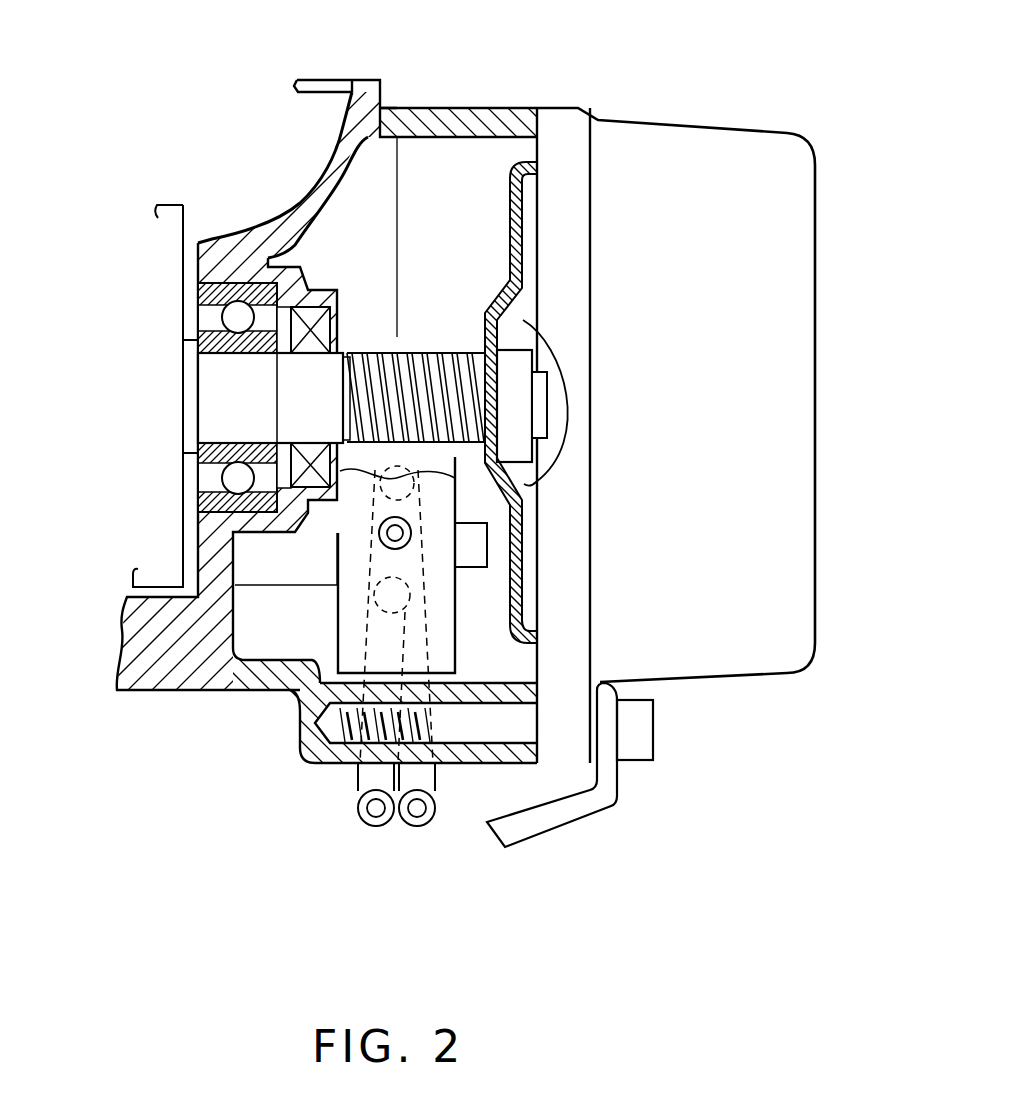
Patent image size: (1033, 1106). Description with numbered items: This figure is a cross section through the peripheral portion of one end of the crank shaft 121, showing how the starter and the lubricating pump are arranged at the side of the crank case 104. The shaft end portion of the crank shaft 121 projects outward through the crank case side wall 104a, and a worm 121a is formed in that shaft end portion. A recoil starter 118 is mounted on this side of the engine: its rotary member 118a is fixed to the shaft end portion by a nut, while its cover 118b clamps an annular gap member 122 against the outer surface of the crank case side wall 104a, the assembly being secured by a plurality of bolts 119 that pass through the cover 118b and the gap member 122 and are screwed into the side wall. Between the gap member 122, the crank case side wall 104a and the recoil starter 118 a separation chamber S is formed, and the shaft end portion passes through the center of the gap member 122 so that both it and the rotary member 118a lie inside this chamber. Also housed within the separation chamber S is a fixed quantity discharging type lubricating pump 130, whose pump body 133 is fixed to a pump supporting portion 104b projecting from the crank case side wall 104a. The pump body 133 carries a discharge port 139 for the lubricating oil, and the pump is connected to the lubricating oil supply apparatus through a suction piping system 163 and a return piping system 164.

The crank case 104 is at (382, 93).
The crank case side wall 104a is at (297, 203).
The pump supporting portion 104b is at (252, 550).
The recoil starter 118 is at (815, 263).
The rotary member 118a is at (523, 258).
The cover 118b is at (552, 693).
The bolt 119 is at (642, 725).
The crank shaft 121 is at (217, 412).
The worm 121a is at (427, 357).
The gap member 122 is at (512, 108).
The lubricating pump 130 is at (330, 632).
The pump body 133 is at (350, 597).
The discharge port 139 is at (397, 532).
The suction piping system 163 is at (430, 775).
The return piping system 164 is at (367, 772).
The separation chamber S is at (483, 215).